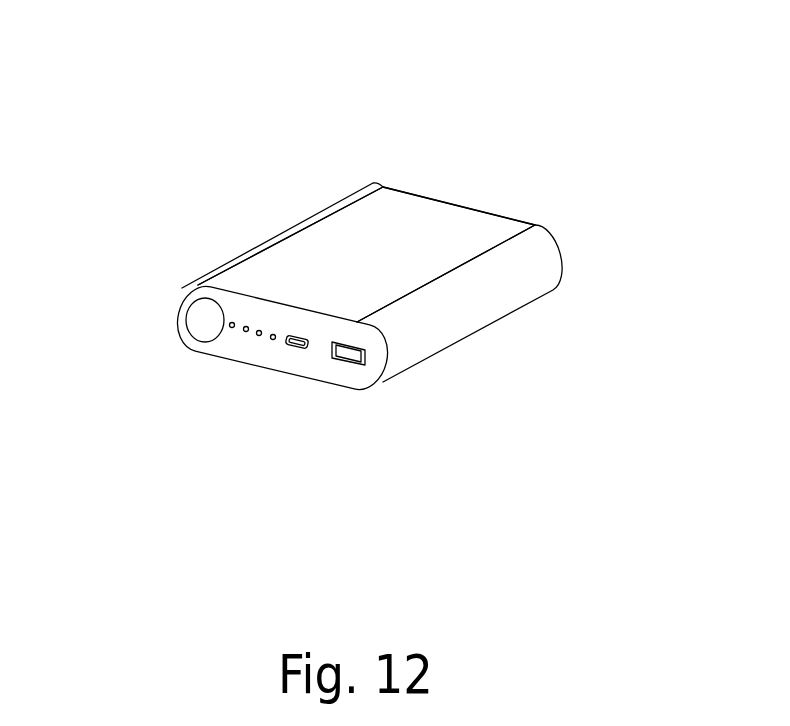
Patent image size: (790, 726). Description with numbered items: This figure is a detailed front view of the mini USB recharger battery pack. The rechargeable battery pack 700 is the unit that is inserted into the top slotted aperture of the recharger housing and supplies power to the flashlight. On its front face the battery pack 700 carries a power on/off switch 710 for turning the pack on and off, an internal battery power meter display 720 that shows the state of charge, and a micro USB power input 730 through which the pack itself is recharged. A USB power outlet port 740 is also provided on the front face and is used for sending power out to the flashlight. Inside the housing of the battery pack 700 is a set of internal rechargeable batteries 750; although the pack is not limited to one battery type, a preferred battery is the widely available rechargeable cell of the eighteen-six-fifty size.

The rechargeable battery pack 700 is at (525, 131).
The power on/off switch 710 is at (205, 320).
The internal battery power meter display 720 is at (250, 387).
The micro USB power input 730 is at (309, 398).
The USB power outlet port 740 is at (352, 355).
The set of internal rechargeable batteries 750 is at (348, 265).